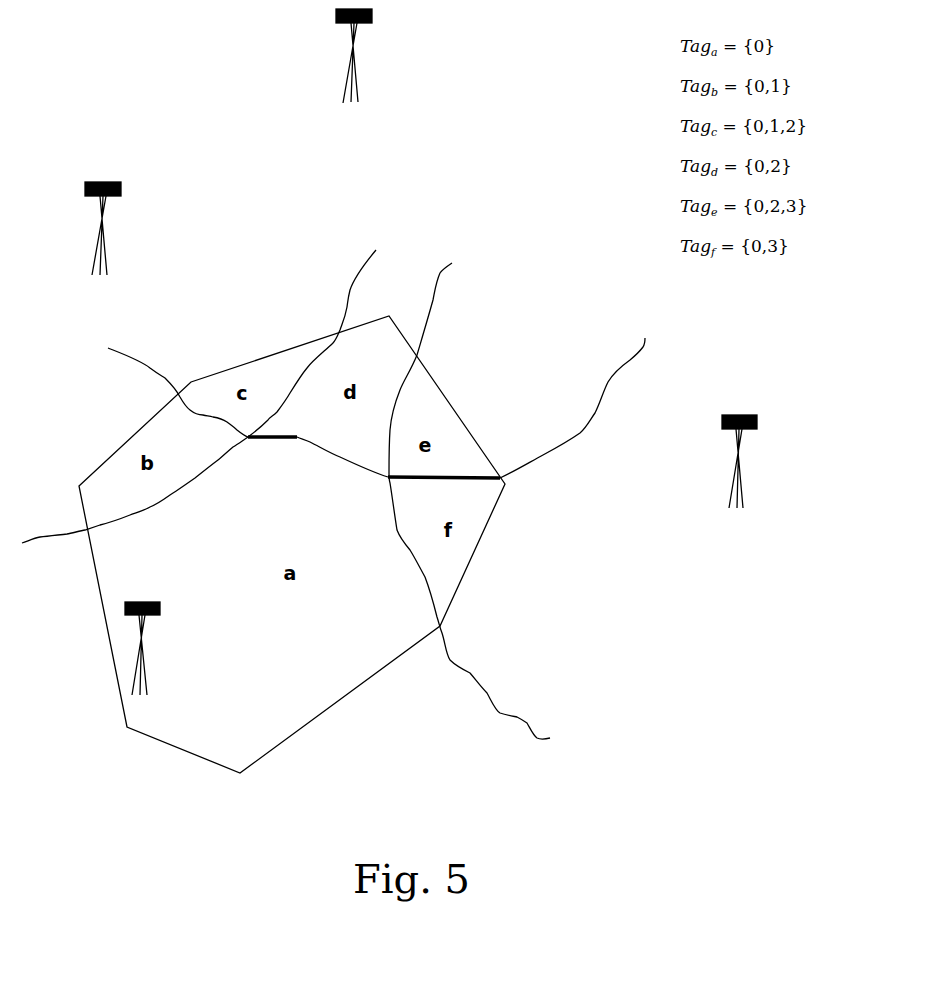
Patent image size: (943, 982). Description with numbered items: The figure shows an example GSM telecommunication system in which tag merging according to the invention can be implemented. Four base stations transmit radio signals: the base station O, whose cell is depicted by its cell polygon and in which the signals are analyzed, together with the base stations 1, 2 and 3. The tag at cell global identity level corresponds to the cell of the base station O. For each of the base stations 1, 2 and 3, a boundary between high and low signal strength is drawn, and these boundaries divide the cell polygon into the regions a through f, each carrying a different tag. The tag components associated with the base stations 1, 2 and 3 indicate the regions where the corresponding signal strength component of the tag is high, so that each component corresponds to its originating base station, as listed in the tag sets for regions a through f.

The base station O is at (159, 647).
The base station 1 is at (199, 358).
The base station 2 is at (376, 240).
The base station 3 is at (590, 501).